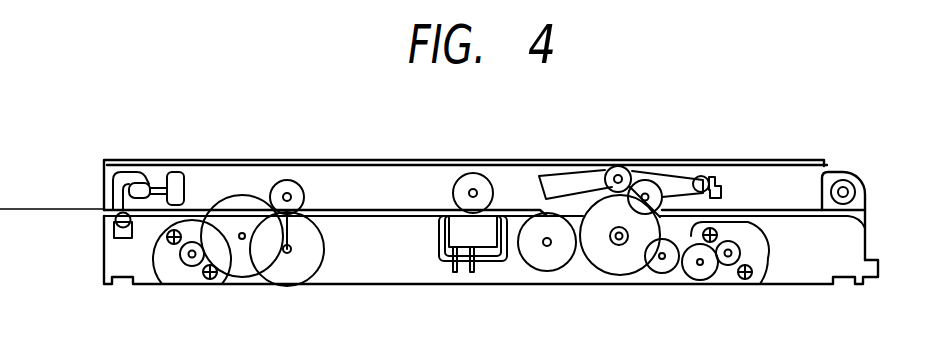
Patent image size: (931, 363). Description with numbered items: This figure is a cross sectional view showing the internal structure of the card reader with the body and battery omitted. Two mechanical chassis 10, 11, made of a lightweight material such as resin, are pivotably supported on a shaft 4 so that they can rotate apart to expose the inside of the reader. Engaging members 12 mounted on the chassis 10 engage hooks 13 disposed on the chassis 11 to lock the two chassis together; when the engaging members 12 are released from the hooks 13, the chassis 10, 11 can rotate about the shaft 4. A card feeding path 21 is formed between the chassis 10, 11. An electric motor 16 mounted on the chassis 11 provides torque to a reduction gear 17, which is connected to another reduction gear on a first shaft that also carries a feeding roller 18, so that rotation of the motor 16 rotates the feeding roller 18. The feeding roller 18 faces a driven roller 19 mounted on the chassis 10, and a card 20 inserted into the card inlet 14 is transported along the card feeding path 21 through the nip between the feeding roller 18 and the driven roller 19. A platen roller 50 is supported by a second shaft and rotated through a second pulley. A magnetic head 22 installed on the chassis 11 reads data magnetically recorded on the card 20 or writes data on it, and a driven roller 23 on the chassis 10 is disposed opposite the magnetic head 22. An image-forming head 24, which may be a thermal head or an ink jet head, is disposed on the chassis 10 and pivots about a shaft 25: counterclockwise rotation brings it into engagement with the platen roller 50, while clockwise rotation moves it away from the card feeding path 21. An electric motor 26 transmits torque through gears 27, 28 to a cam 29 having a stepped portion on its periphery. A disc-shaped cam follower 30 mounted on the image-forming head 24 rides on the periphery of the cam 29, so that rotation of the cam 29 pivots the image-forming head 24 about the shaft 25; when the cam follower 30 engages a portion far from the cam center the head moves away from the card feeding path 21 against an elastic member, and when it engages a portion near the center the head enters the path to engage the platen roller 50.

The shaft 4 is at (843, 180).
The chassis 10 is at (352, 160).
The chassis 11 is at (640, 285).
The engaging member 12 is at (157, 178).
The hook 13 is at (120, 172).
The card inlet 14 is at (104, 209).
The electric motor 16 is at (176, 277).
The reduction gear 17 is at (237, 270).
The feeding roller 18 is at (315, 275).
The driven roller 19 is at (279, 181).
The card 20 is at (48, 211).
The card feeding path 21 is at (367, 216).
The magnetic head 22 is at (465, 243).
The driven roller 23 is at (473, 172).
The image-forming head 24 is at (566, 173).
The shaft 25 is at (702, 178).
The electric motor 26 is at (762, 260).
The gear 27 is at (690, 277).
The gear 28 is at (665, 270).
The cam 29 is at (613, 264).
The cam follower 30 is at (618, 168).
The platen roller 50 is at (543, 268).